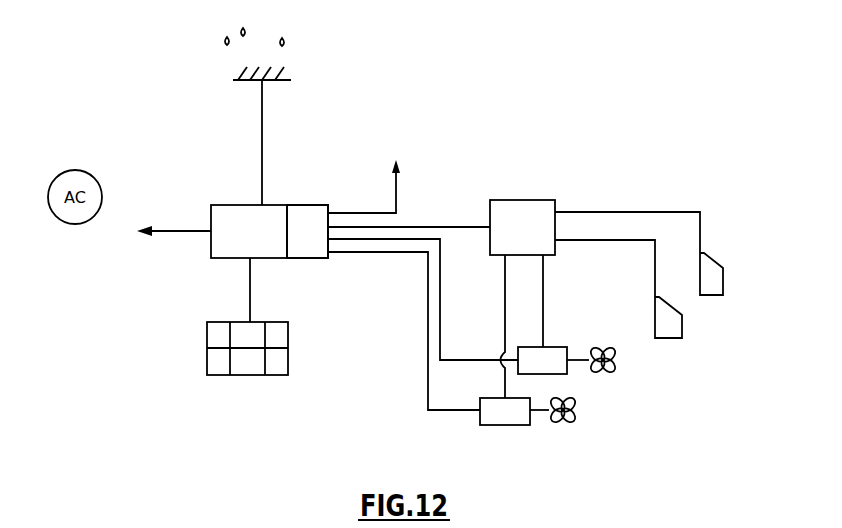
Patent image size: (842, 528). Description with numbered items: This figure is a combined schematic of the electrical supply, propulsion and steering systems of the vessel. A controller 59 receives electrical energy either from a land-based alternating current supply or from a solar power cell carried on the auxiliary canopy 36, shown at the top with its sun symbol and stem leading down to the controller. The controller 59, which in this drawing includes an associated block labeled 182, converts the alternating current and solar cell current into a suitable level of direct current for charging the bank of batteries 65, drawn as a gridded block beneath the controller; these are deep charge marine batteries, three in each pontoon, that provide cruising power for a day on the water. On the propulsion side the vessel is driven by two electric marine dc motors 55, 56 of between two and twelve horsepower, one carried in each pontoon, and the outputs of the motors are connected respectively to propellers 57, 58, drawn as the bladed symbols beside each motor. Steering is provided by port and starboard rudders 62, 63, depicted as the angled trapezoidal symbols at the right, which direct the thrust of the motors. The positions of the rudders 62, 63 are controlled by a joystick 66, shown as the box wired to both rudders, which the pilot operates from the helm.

The auxiliary canopy 36 is at (262, 63).
The controller 59 is at (240, 212).
The controller module 182 is at (305, 218).
The bank of batteries 65 is at (218, 376).
The joystick 66 is at (559, 200).
The port rudder 62 is at (724, 283).
The starboard rudder 63 is at (684, 327).
The electric marine dc motor 55 is at (555, 347).
The propeller 57 is at (615, 352).
The electric marine dc motor 56 is at (500, 426).
The propeller 58 is at (578, 404).